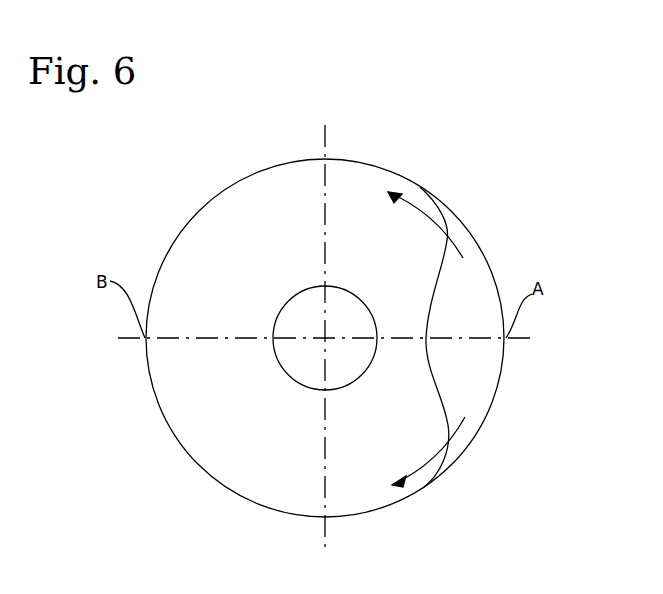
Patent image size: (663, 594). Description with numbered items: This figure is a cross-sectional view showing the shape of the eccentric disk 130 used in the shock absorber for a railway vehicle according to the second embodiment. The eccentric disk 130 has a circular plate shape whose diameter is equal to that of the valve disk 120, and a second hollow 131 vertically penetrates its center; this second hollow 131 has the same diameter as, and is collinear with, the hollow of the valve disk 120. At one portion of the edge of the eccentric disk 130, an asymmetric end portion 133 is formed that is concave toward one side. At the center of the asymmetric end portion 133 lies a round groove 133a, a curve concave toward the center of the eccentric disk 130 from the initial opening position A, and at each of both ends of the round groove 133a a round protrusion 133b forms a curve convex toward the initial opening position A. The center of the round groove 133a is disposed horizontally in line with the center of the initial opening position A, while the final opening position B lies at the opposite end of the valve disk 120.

The valve disk 120 is at (470, 275).
The eccentric disk 130 is at (388, 172).
The second hollow 131 is at (297, 380).
The asymmetric end portion 133 is at (530, 377).
The round groove 133a is at (427, 340).
The round protrusion 133b is at (443, 400).